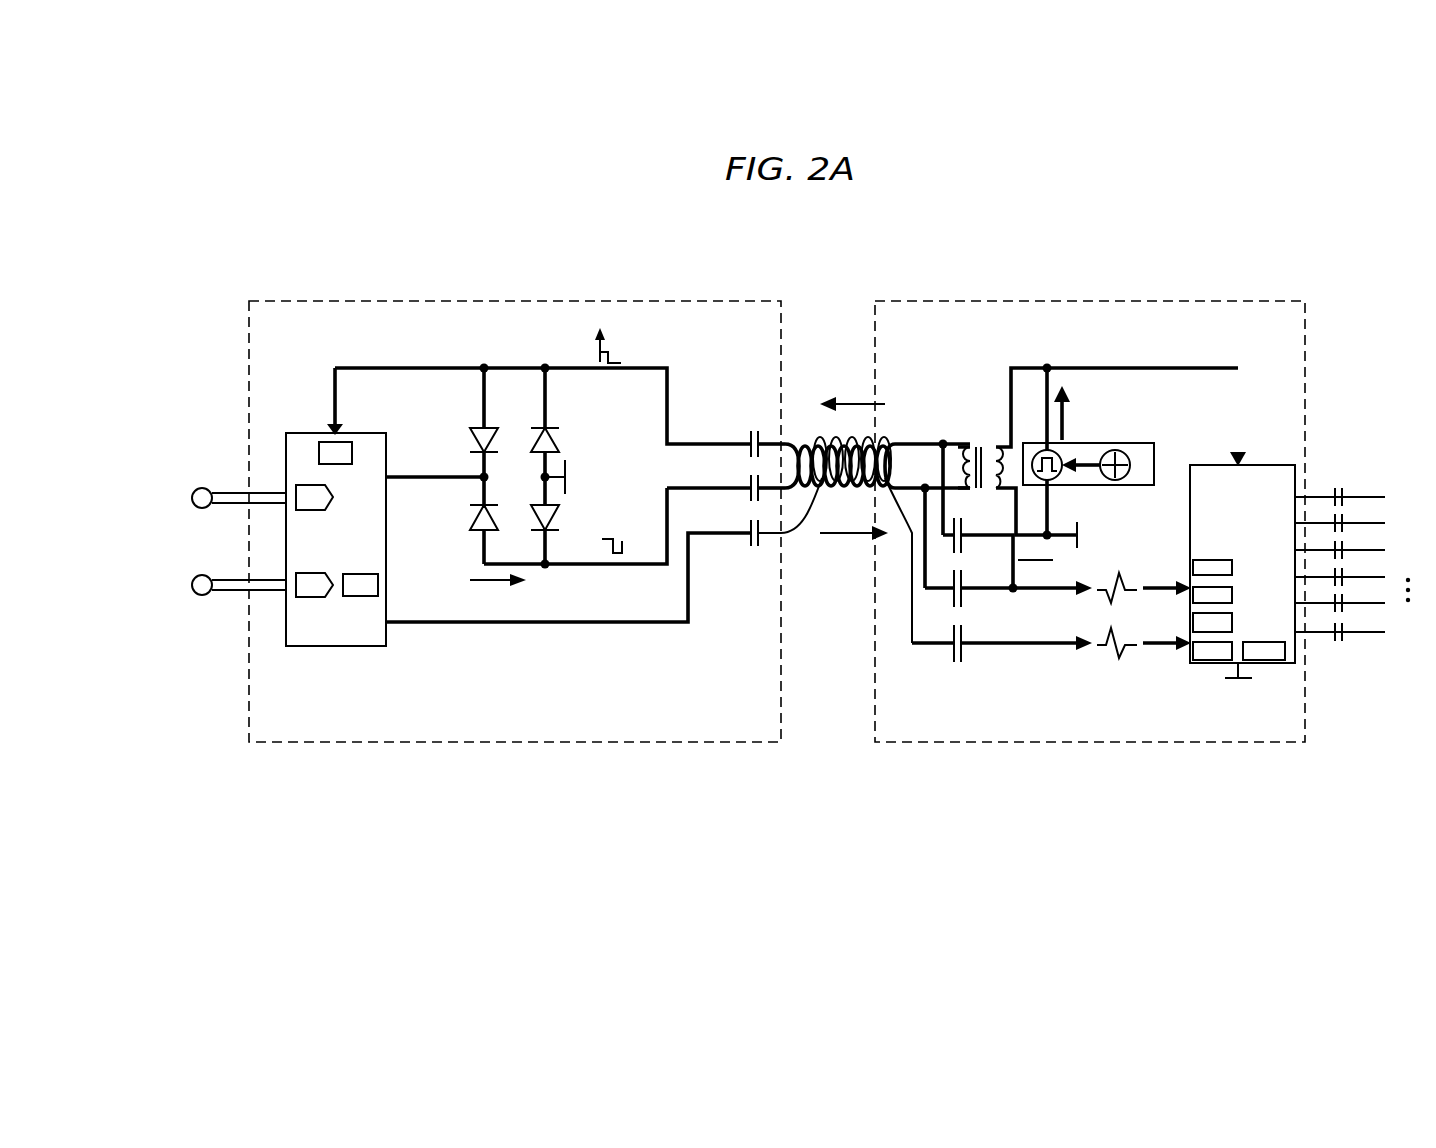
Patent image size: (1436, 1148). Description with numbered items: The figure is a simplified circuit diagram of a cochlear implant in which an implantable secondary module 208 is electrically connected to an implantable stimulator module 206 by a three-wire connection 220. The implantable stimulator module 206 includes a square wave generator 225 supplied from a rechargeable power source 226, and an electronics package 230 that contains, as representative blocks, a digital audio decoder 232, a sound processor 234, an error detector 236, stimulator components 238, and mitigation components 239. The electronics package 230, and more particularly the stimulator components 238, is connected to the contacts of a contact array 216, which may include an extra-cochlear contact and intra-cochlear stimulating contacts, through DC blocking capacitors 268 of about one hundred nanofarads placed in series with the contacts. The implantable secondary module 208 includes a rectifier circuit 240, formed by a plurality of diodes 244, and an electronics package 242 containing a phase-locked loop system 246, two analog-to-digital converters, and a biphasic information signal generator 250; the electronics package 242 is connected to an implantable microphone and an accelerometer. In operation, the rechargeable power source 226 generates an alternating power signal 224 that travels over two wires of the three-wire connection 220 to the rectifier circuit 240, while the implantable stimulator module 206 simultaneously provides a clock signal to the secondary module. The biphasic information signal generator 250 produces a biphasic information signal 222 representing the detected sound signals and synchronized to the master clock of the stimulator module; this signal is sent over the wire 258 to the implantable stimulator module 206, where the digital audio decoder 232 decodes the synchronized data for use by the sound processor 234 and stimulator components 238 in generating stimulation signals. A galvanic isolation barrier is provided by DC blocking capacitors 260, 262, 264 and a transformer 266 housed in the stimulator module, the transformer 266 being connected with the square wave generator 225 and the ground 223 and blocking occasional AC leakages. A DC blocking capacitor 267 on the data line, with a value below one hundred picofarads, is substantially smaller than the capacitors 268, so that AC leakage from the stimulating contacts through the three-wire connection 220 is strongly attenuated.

The implantable secondary module 208 is at (318, 301).
The implantable stimulator module 206 is at (1238, 301).
The electronics package 242 is at (386, 638).
The phase-locked loop (PLL) system 246 is at (352, 452).
The biphasic information signal generator 250 is at (368, 598).
The rectifier circuit 240 is at (510, 408).
The diodes 244 is at (470, 518).
The wire 258 is at (672, 625).
The biphasic information signal 222 is at (470, 580).
The DC blocking capacitor C1 260 is at (760, 432).
The DC blocking capacitor C2 262 is at (750, 498).
The DC blocking capacitor C3 264 is at (752, 547).
The three-wire connection 220 is at (875, 770).
The power signal 224 is at (860, 404).
The transformer 266 is at (1000, 413).
The ground 223 is at (1080, 540).
The square wave generator 225 is at (1140, 443).
The rechargeable power source 226 is at (1128, 472).
The DC blocking capacitor 267 is at (950, 655).
The stimulator components 238 is at (1190, 655).
The digital audio decoder 232 is at (1234, 568).
The sound processor 234 is at (1234, 595).
The error detector 236 is at (1234, 622).
The electronics package 230 is at (1207, 665).
The mitigation components 239 is at (1270, 665).
The DC blocking capacitors 268 is at (1358, 483).
The contact array 216 is at (1430, 483).